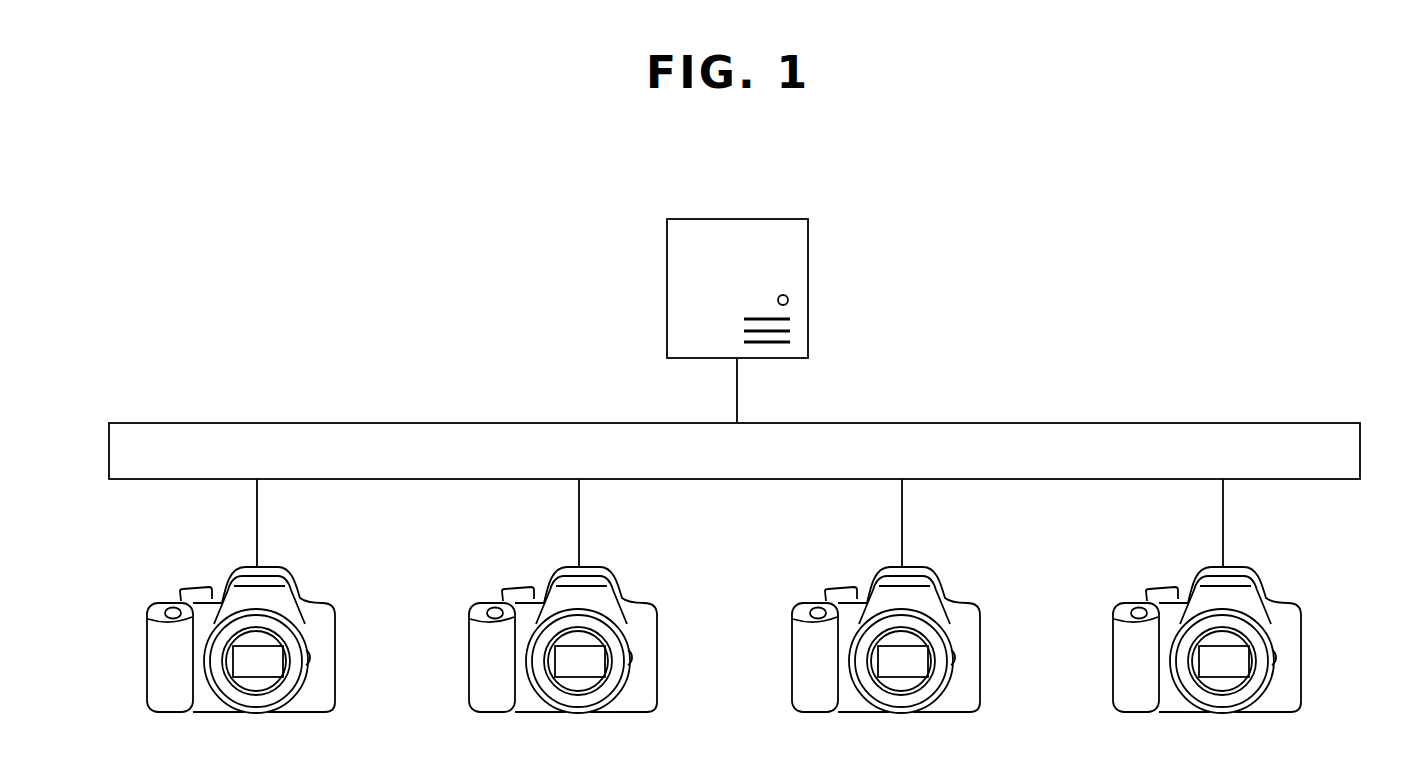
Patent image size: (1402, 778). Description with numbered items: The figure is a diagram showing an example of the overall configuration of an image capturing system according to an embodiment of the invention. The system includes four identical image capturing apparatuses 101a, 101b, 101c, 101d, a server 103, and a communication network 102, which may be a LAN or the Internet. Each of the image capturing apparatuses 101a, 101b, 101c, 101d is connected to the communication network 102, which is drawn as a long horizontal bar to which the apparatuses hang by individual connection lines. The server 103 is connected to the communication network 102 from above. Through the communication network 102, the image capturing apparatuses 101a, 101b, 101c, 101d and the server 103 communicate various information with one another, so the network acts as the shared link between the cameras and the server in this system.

The image capturing apparatus 101a is at (342, 581).
The image capturing apparatus 101b is at (578, 596).
The image capturing apparatus 101c is at (900, 596).
The image capturing apparatus 101d is at (1222, 596).
The communication network 102 is at (1301, 423).
The server 103 is at (775, 219).